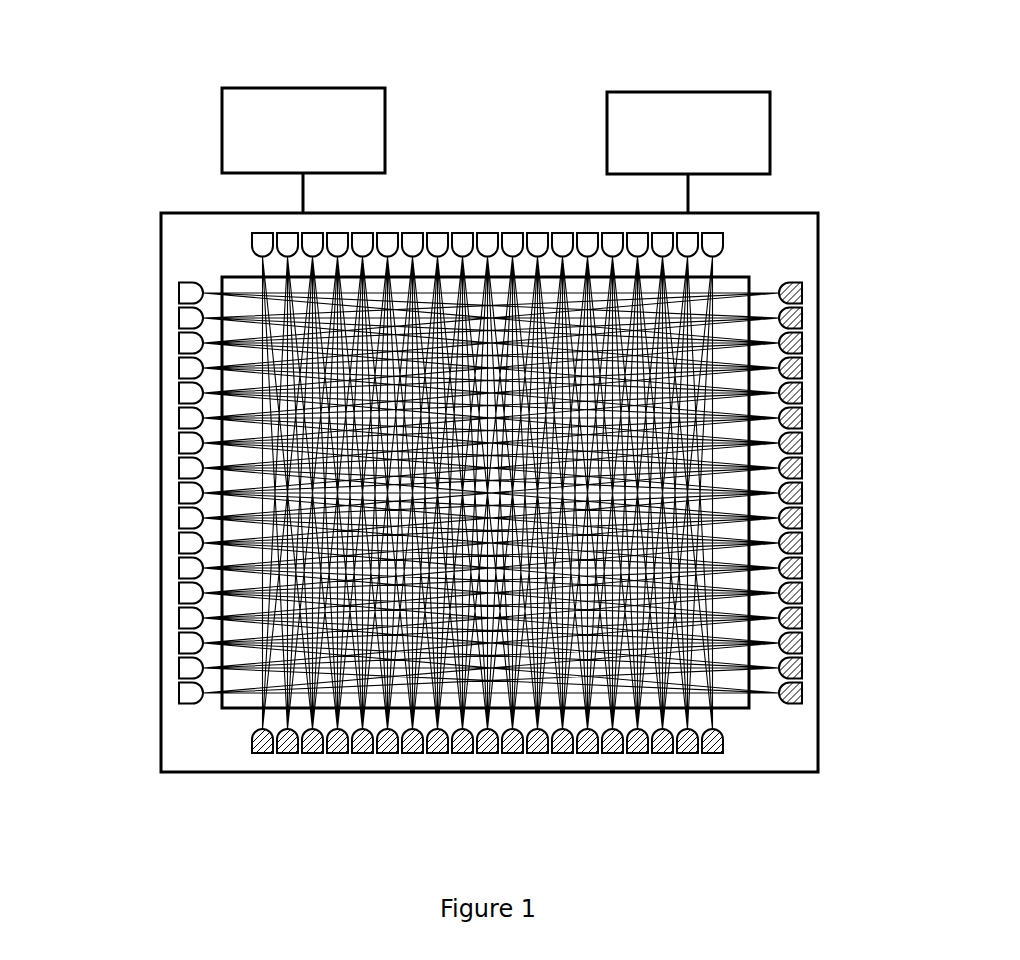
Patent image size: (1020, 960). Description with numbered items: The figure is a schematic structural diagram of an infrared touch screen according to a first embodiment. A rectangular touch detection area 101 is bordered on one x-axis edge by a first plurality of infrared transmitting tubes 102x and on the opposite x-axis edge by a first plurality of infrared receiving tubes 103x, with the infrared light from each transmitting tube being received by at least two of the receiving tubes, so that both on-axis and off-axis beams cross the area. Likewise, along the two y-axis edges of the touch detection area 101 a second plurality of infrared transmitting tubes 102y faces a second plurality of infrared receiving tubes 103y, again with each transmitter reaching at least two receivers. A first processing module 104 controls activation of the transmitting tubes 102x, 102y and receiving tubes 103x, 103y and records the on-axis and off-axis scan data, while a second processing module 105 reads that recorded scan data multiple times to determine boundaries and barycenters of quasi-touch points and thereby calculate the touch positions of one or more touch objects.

The touch detection area 101 is at (730, 708).
The first plurality of infrared transmitting tubes 102x is at (723, 233).
The second plurality of infrared transmitting tubes 102y is at (179, 284).
The first plurality of infrared receiving tubes 103x is at (723, 753).
The second plurality of infrared receiving tubes 103y is at (802, 284).
The first processing module 104 is at (307, 88).
The second processing module 105 is at (688, 92).